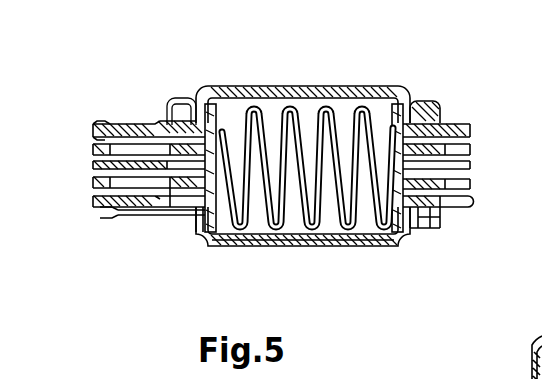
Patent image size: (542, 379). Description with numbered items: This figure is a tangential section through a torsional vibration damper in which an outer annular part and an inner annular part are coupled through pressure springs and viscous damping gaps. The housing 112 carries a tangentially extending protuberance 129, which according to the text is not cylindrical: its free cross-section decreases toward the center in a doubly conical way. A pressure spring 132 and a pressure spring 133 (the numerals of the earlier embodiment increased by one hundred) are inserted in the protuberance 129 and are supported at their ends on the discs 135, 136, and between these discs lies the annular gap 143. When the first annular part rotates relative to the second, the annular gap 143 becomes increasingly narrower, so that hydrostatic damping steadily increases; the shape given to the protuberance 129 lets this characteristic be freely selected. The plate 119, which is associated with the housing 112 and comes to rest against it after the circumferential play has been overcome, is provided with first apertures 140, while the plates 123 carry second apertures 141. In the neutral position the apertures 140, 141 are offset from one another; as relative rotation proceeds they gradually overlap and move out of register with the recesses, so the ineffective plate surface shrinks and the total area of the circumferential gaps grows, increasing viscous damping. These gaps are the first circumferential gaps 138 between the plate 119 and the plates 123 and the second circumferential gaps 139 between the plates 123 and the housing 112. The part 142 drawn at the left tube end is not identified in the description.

The housing 112 is at (103, 123).
The outer tube 142 is at (140, 128).
The disc 135 is at (222, 114).
The protuberance 129 is at (275, 92).
The pressure spring 132 is at (330, 112).
The pressure spring 133 is at (385, 103).
The disc 136 is at (427, 102).
The first apertures 140 is at (92, 166).
The plate 119 is at (124, 198).
The second apertures 141 is at (152, 178).
The plate 123 is at (186, 190).
The annular gap 143 is at (231, 241).
The first circumferential gap 138 is at (426, 229).
The second circumferential gap 139 is at (458, 198).